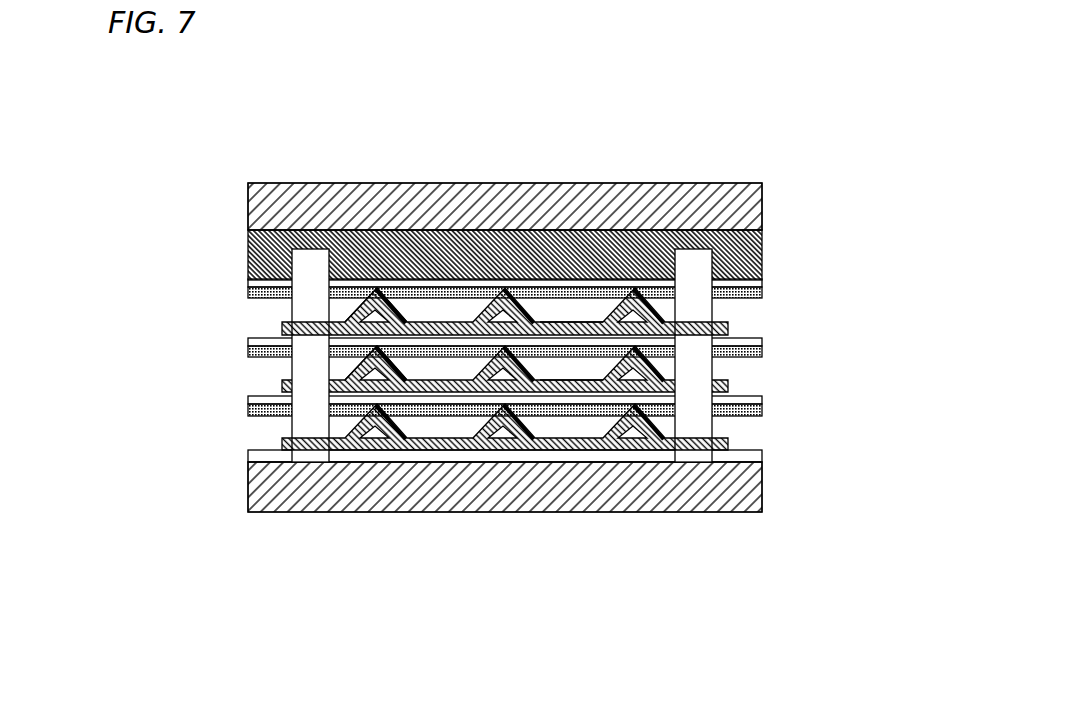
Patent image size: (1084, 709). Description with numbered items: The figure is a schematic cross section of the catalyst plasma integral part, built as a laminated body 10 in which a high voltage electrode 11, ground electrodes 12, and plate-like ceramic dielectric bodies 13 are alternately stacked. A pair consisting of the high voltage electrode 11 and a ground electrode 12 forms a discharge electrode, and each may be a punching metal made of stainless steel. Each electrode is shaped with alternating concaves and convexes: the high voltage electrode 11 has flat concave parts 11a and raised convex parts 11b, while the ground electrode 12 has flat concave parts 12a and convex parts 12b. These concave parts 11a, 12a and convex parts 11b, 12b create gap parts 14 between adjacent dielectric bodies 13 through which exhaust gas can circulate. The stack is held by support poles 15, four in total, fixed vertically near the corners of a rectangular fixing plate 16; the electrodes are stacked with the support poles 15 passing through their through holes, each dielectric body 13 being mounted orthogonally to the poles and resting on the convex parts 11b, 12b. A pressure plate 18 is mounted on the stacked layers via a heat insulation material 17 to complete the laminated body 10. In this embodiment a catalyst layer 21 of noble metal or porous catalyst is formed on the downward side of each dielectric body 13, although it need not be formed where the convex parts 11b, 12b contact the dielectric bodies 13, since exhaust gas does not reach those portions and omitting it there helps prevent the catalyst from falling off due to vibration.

The laminated body 10 is at (850, 183).
The high voltage electrode 11 is at (282, 382).
The concave part 11a is at (578, 381).
The convex part 11b is at (373, 366).
The ground electrode 12 is at (282, 325).
The concave part 12a is at (570, 323).
The convex part 12b is at (377, 288).
The dielectric body 13 is at (762, 460).
The gap part 14 is at (453, 310).
The support pole 15 is at (312, 262).
The fixing plate 16 is at (693, 500).
The heat insulation material 17 is at (258, 258).
The pressure plate 18 is at (260, 207).
The catalyst layer 21 is at (763, 298).